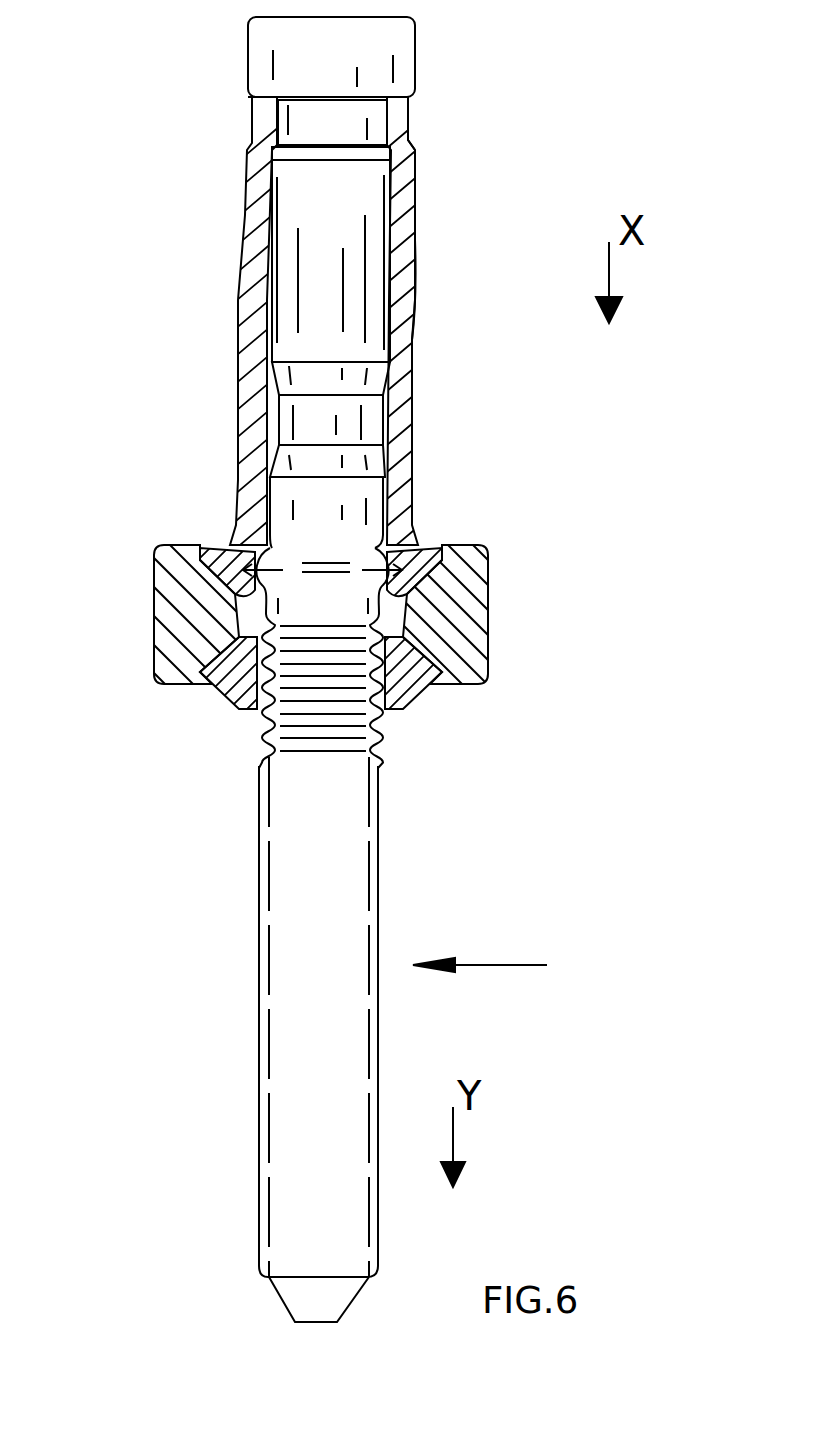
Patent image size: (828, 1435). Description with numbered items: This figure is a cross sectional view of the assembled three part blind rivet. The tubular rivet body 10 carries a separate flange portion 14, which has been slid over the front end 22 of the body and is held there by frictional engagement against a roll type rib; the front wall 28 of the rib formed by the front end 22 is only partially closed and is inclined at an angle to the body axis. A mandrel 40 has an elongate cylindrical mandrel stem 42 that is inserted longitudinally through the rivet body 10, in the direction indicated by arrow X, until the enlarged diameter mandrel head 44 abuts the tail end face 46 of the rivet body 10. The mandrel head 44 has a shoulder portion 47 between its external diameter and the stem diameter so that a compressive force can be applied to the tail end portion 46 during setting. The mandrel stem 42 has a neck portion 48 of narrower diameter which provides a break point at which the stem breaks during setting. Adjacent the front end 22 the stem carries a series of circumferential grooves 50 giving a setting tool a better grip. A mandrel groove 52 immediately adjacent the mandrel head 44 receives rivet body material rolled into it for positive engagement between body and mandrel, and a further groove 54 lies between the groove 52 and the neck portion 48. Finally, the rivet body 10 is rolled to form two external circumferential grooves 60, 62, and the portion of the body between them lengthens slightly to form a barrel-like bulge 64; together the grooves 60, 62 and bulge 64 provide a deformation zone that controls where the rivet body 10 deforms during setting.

The rivet body 10 is at (405, 181).
The flange portion 14 is at (470, 603).
The front end 22 is at (224, 699).
The front wall 28 is at (415, 700).
The mandrel 40 is at (507, 970).
The mandrel stem 42 is at (335, 852).
The mandrel head 44 is at (380, 50).
The tail end face 46 is at (263, 94).
The shoulder portion 47 is at (408, 115).
The neck portion 48 is at (410, 550).
The circumferential grooves 50 is at (270, 753).
The mandrel groove 52 is at (300, 125).
The further groove 54 is at (273, 422).
The external circumferential groove 60 is at (412, 229).
The external circumferential groove 62 is at (415, 352).
The bulge 64 is at (415, 283).